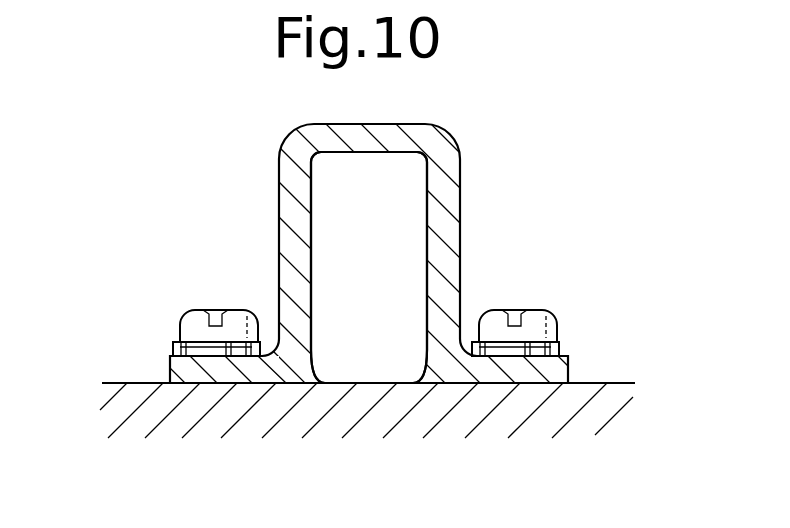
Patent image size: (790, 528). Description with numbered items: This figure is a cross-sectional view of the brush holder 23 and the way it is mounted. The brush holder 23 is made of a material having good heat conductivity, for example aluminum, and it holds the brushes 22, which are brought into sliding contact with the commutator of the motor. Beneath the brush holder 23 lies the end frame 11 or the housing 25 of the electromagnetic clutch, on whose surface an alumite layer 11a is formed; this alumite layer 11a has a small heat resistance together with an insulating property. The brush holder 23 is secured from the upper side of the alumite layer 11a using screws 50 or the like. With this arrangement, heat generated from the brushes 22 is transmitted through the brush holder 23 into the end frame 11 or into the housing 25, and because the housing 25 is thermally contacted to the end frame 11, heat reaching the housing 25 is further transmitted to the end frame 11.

The end frame 11 is at (367, 434).
The housing 25 is at (523, 410).
The alumite layer 11a is at (588, 383).
The brushes 22 is at (413, 218).
The brush holder 23 is at (458, 138).
The screws 50 is at (552, 328).